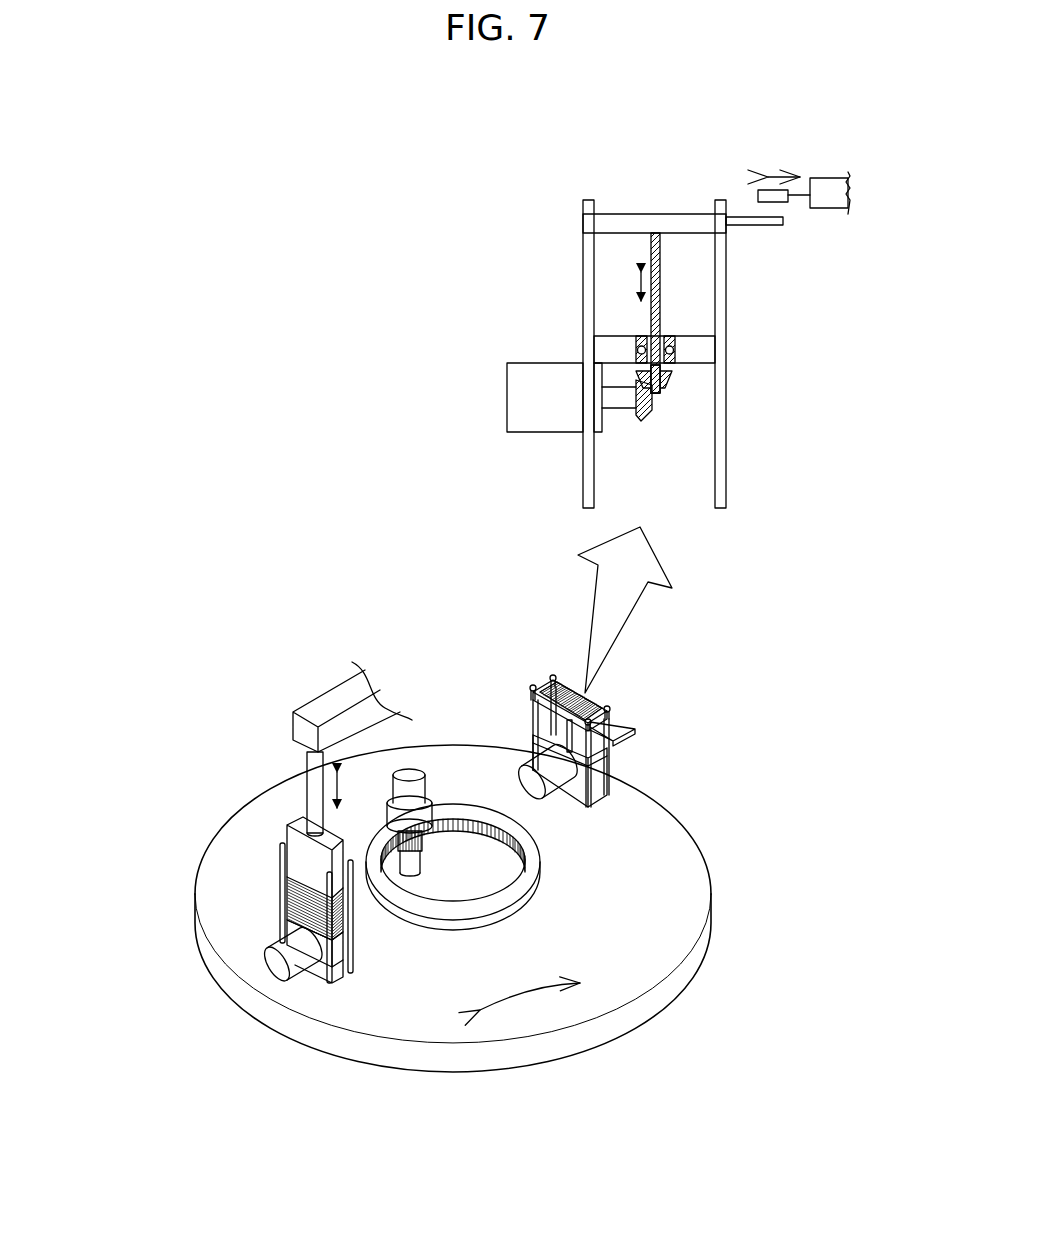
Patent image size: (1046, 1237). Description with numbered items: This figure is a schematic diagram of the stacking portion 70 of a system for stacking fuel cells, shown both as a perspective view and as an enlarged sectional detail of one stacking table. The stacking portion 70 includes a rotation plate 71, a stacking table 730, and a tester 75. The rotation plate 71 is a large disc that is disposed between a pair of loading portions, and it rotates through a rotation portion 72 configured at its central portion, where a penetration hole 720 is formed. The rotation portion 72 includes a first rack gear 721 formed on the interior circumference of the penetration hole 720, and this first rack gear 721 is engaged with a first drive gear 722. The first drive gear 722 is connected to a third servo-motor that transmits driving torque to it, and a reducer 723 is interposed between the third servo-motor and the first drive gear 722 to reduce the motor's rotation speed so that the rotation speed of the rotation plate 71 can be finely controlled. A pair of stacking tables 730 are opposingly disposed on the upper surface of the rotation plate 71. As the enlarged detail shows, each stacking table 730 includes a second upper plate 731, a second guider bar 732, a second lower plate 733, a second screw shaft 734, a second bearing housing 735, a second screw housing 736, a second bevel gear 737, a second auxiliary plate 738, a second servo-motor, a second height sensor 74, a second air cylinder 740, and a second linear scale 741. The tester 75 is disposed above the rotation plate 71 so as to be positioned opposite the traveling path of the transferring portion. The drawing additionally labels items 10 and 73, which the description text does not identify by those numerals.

The tray 10 is at (300, 905).
The stacking portion 70 is at (323, 652).
The rotation plate 71 is at (690, 898).
The rotation portion 72 is at (568, 898).
The lifting station 73 is at (533, 719).
The second height sensor 74 is at (775, 153).
The tester 75 is at (315, 710).
The penetration hole 720 is at (455, 912).
The first rack gear 721 is at (532, 853).
The first drive gear 722 is at (414, 850).
The reducer 723 is at (428, 820).
The stacking table 730 is at (428, 817).
The second upper plate 731 is at (630, 222).
The second guider bar 732 is at (583, 276).
The second lower plate 733 is at (617, 345).
The second screw shaft 734 is at (661, 268).
The second bearing housing 735 is at (672, 338).
The second screw housing 736 is at (660, 336).
The second bevel gear 737 is at (666, 382).
The second auxiliary plate 738 is at (784, 221).
The second air cylinder 740 is at (823, 180).
The second linear scale 741 is at (759, 192).